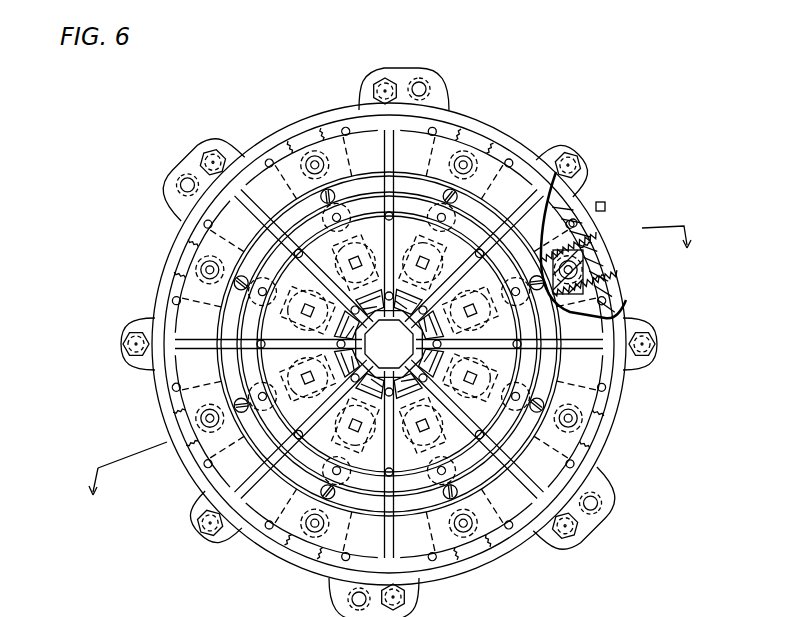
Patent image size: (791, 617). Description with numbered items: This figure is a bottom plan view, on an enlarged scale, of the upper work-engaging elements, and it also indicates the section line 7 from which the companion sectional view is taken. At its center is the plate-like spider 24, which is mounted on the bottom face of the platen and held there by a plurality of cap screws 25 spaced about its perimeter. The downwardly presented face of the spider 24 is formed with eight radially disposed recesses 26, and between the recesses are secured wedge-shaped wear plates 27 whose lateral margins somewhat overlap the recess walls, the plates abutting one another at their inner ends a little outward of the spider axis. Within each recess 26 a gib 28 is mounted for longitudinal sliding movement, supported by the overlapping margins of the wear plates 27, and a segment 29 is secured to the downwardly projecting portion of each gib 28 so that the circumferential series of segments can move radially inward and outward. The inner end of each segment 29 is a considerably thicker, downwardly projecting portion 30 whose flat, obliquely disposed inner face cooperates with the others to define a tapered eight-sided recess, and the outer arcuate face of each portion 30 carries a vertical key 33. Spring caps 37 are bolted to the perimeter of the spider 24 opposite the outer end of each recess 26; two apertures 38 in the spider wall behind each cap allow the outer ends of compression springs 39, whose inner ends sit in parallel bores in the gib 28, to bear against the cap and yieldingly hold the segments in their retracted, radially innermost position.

The spider 24 is at (527, 138).
The cap screws 25 is at (385, 80).
The recesses 26 is at (294, 138).
The wear plates 27 is at (246, 170).
The gib 28 is at (604, 258).
The segment 29 is at (352, 118).
The thickened portion 30 is at (430, 262).
The keys 33 is at (352, 257).
The spring caps 37 is at (254, 135).
The apertures 38 is at (626, 216).
The compression springs 39 is at (606, 205).
The section line 7- 7 is at (397, 372).